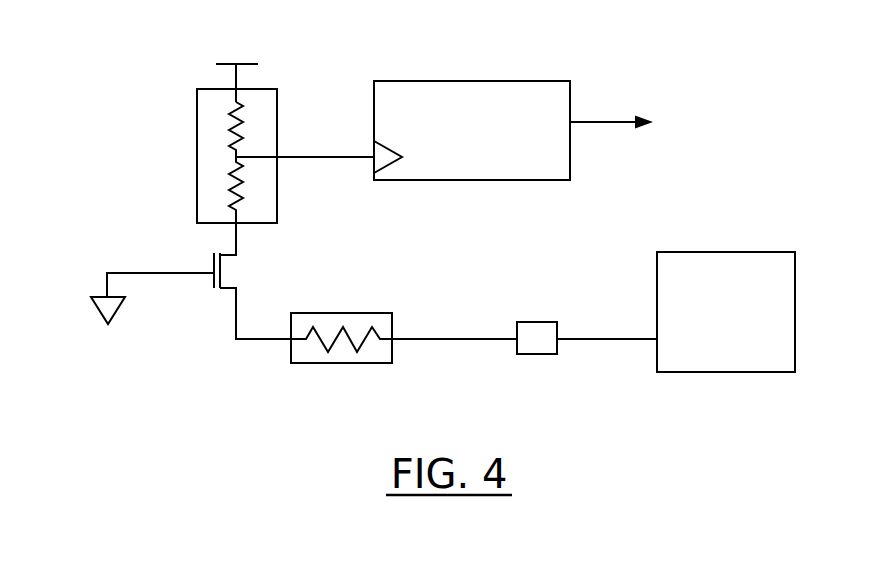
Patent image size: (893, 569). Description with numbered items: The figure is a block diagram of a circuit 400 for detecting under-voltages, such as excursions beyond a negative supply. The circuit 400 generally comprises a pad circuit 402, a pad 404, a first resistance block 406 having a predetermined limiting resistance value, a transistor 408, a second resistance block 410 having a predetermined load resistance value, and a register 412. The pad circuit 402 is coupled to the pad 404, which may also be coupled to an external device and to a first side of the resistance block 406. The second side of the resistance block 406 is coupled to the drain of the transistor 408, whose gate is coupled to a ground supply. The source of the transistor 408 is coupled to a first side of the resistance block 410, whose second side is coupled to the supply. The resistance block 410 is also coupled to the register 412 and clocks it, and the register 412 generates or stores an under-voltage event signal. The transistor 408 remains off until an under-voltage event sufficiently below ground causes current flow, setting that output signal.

The circuit 400 is at (110, 22).
The pad circuit 402 is at (783, 373).
The pad 404 is at (547, 356).
The resistance block 406 is at (352, 365).
The transistor 408 is at (236, 279).
The resistance block 410 is at (278, 175).
The register 412 is at (452, 79).